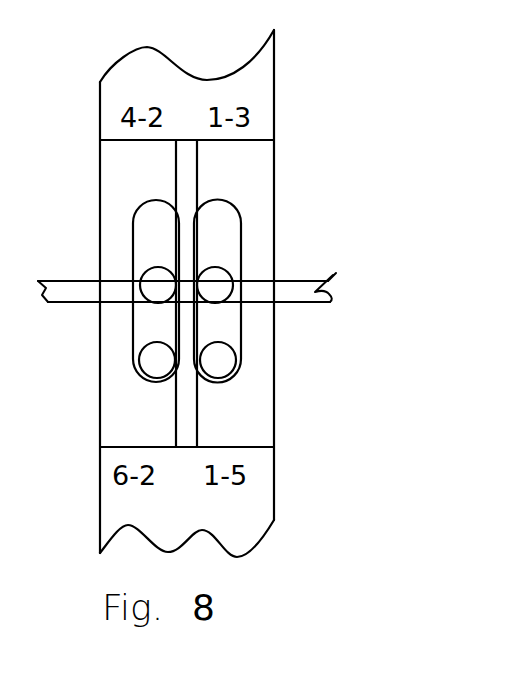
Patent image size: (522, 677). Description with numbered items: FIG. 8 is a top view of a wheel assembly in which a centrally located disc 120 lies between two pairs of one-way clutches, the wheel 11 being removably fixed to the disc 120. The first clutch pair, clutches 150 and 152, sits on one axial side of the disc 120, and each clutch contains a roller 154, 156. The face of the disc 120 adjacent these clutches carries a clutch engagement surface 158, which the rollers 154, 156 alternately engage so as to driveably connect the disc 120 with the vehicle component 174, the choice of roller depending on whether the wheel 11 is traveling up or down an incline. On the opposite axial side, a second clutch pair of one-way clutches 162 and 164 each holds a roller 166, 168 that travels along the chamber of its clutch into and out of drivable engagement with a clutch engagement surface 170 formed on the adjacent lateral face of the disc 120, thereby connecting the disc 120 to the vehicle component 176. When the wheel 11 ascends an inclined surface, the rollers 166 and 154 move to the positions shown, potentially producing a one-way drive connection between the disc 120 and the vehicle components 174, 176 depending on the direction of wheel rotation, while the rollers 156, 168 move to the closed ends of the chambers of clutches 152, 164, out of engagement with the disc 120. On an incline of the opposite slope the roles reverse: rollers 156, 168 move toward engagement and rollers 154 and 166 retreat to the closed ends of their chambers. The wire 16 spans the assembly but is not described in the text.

The wheel 11 is at (262, 85).
The wire 16 is at (336, 273).
The disc 120 is at (190, 192).
The vehicle component 174 is at (262, 165).
The clutch engagement surface 170 is at (173, 250).
The vehicle component 176 is at (107, 225).
The one-way clutch 162 is at (137, 262).
The roller 166 is at (152, 288).
The one-way clutch 164 is at (135, 320).
The roller 168 is at (158, 363).
The clutch engagement surface 158 is at (197, 242).
The one-way clutch 150 is at (238, 251).
The roller 154 is at (213, 287).
The one-way clutch 152 is at (240, 322).
The roller 156 is at (222, 362).